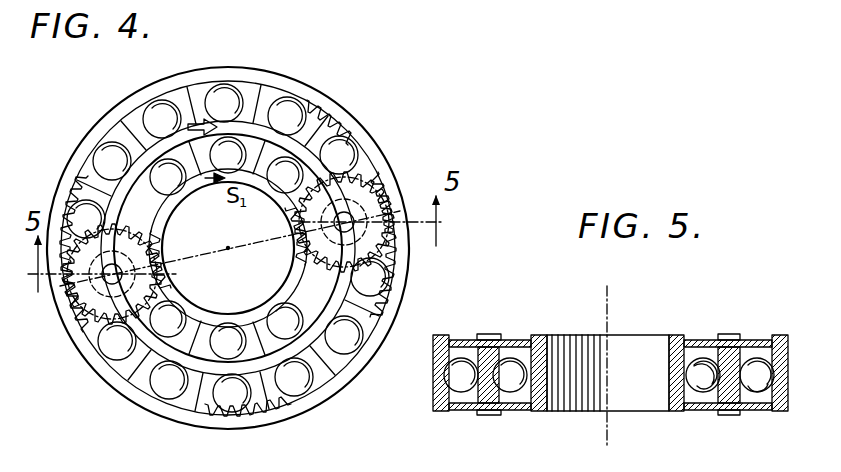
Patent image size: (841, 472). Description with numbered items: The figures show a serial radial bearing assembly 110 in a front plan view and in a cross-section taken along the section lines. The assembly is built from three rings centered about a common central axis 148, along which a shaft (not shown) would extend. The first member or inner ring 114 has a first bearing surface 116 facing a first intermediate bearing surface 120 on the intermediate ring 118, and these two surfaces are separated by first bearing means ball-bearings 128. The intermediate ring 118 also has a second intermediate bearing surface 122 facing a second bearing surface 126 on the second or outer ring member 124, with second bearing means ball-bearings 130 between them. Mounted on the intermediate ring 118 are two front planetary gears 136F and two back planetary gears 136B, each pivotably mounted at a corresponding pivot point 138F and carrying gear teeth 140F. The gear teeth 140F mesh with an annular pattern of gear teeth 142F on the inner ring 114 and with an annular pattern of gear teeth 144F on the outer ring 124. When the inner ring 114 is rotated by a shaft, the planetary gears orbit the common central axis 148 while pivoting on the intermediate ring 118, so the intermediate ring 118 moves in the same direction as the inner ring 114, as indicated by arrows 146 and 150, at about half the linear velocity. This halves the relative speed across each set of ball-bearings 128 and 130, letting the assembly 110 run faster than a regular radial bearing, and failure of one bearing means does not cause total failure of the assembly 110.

In FIG. 4, the serial radial bearing assembly 110 is at (104, 105).
In FIG. 5, the serial radial bearing assembly 110 is at (735, 320).
In FIG. 4, the first member or inner ring 114 is at (228, 330).
In FIG. 5, the first member or inner ring 114 is at (547, 334).
In FIG. 5, the first bearing surface 116 is at (538, 338).
In FIG. 4, the intermediate member or ring 118 is at (256, 70).
In FIG. 5, the intermediate member or ring 118 is at (716, 338).
In FIG. 5, the first intermediate bearing surface 120 is at (700, 378).
In FIG. 5, the second intermediate bearing surface 122 is at (746, 366).
In FIG. 4, the second or outer ring member 124 is at (364, 124).
In FIG. 5, the second or outer ring member 124 is at (437, 322).
In FIG. 5, the second bearing surface 126 is at (758, 396).
In FIG. 4, the first bearing means ball-bearings 128 is at (278, 318).
In FIG. 5, the first bearing means ball-bearings 128 is at (688, 371).
In FIG. 5, the second bearing means ball-bearings 130 is at (758, 395).
In FIG. 4, the back planetary gears 136B is at (228, 248).
In FIG. 5, the back planetary gears 136B is at (455, 338).
In FIG. 4, the front planetary gears 136F is at (378, 188).
In FIG. 5, the front planetary gears 136F is at (464, 410).
In FIG. 4, the pivot point 138F is at (392, 250).
In FIG. 5, the pivot point 138F is at (497, 412).
In FIG. 4, the gear teeth 140F is at (392, 280).
In FIG. 4, the gear teeth on the inner ring 142F is at (140, 400).
In FIG. 4, the gear teeth on the outer ring 144F is at (283, 408).
In FIG. 4, the arrow 146 is at (216, 179).
In FIG. 4, the common central axis 148 is at (229, 247).
In FIG. 5, the common central axis 148 is at (610, 304).
In FIG. 4, the arrow 150 is at (193, 121).